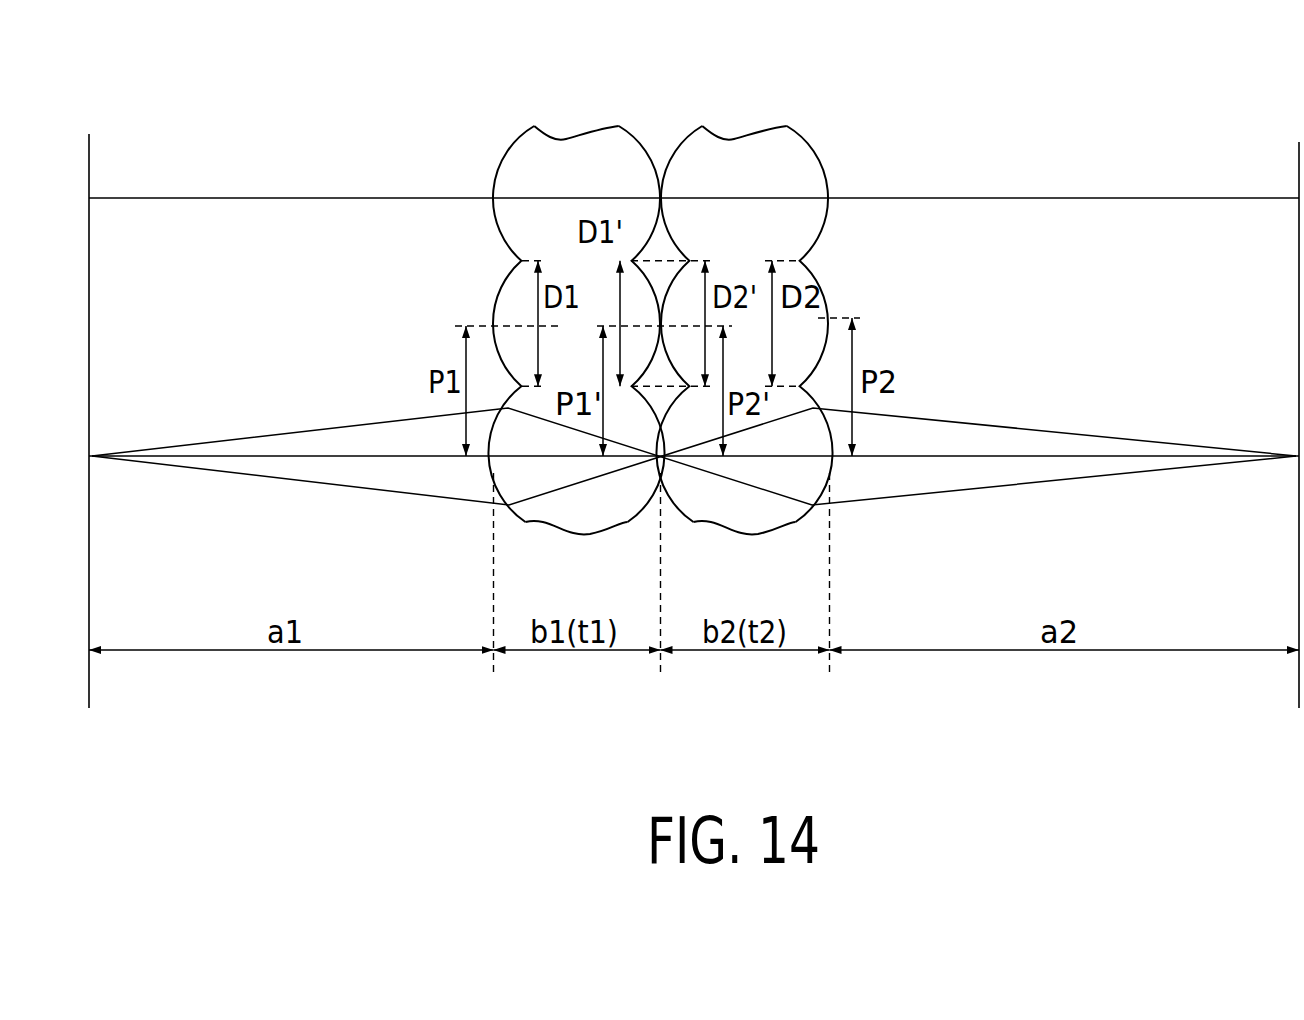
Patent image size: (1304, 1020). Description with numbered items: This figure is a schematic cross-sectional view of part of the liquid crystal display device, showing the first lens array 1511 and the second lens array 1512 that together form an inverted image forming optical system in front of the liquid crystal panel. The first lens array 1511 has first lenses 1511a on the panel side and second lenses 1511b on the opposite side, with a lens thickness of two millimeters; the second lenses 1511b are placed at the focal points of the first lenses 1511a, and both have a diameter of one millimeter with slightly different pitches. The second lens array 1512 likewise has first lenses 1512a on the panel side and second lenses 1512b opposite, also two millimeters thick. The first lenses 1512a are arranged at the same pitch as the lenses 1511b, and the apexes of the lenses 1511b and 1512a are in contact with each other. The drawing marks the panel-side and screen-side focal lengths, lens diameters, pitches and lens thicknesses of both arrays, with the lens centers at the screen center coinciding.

The first lens array 1511 is at (540, 287).
The first lenses 1511a is at (504, 156).
The second lenses 1511b is at (645, 146).
The second lens array 1512 is at (786, 291).
The first lenses 1512a is at (683, 143).
The second lenses 1512b is at (853, 142).